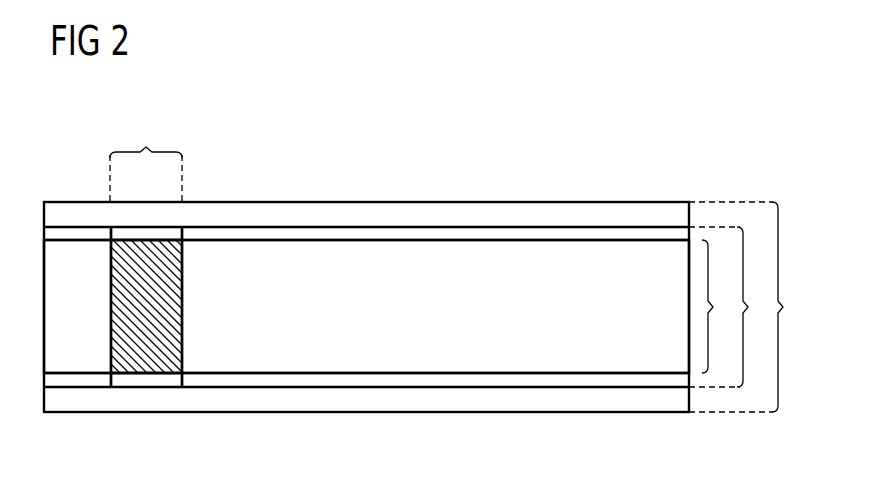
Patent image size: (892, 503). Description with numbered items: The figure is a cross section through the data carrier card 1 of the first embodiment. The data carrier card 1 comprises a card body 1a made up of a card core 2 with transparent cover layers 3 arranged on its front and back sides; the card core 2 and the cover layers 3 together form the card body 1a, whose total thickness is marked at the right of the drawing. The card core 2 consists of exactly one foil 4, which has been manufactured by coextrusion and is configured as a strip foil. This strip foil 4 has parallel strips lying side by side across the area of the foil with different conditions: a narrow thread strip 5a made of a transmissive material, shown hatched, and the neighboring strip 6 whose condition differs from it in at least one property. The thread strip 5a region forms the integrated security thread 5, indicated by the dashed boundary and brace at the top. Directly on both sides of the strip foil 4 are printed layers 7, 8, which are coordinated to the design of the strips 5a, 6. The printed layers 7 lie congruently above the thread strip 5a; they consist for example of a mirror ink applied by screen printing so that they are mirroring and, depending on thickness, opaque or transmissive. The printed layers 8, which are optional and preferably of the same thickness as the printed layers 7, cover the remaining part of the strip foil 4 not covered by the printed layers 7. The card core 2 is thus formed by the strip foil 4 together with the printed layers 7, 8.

The data carrier card 1 is at (92, 151).
The card body 1a is at (752, 307).
The card core 2 is at (728, 307).
The transparent cover layers 3 is at (612, 212).
The foil 4 is at (717, 306).
The security thread 5 is at (146, 252).
The thread strip 5a is at (162, 363).
The strip 6 is at (70, 255).
The printed layers 7 is at (147, 233).
The printed layers 8 is at (374, 233).